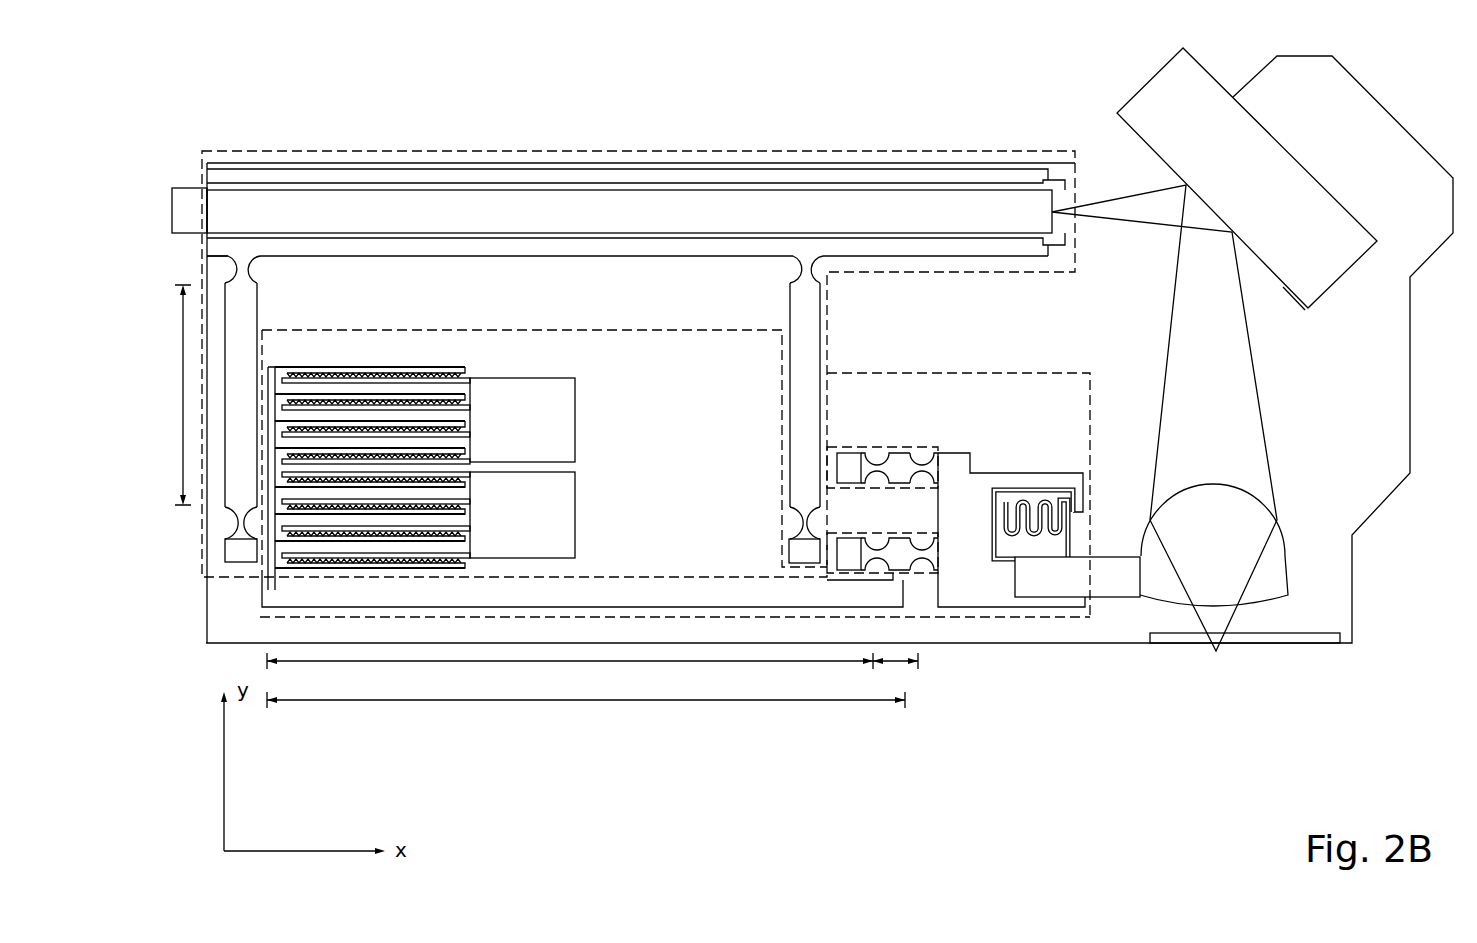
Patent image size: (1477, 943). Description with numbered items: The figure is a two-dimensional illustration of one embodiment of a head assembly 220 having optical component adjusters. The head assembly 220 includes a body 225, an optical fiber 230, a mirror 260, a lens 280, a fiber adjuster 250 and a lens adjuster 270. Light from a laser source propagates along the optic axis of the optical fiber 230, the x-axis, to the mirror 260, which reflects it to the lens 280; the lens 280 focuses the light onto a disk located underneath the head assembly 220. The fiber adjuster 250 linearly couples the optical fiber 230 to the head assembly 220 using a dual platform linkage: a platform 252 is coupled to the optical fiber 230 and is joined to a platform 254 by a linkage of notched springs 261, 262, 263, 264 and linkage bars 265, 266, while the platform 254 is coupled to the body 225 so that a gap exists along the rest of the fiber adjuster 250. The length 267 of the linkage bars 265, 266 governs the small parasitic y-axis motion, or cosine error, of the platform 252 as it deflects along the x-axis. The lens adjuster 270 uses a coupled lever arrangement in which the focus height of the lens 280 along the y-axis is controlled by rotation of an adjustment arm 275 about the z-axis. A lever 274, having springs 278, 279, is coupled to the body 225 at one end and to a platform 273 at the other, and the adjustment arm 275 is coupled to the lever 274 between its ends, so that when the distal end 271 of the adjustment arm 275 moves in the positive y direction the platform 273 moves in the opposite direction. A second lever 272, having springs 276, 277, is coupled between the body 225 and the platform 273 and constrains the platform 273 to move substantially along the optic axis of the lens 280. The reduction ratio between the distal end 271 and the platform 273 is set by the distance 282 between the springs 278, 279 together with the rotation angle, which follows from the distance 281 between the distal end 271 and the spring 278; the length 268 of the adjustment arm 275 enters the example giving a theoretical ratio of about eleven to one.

The head assembly 220 is at (964, 48).
The body 225 is at (1412, 393).
The optical fiber 230 is at (629, 223).
The fiber adjuster 250 is at (626, 332).
The platform 252 is at (463, 257).
The platform 254 is at (224, 550).
The mirror 260 is at (1280, 194).
The notched spring 261 is at (262, 273).
The notched spring 262 is at (229, 524).
The notched spring 263 is at (788, 273).
The notched spring 264 is at (786, 526).
The linkage bar 265 is at (258, 302).
The linkage bar 266 is at (788, 405).
The length of linkage bars 267 is at (184, 378).
The length of adjustment arm 268 is at (546, 702).
The lens adjuster 270 is at (943, 372).
The distal end of adjustment arm 271 is at (255, 598).
The lever 272 is at (938, 447).
The platform 273 is at (971, 584).
The lever 274 is at (836, 537).
The adjustment arm 275 is at (594, 598).
The spring 276 is at (877, 445).
The spring 277 is at (921, 445).
The spring 278 is at (877, 541).
The spring 279 is at (920, 541).
The lens 280 is at (1234, 561).
The distance between distal end and spring 281 is at (692, 662).
The distance between springs 282 is at (893, 662).